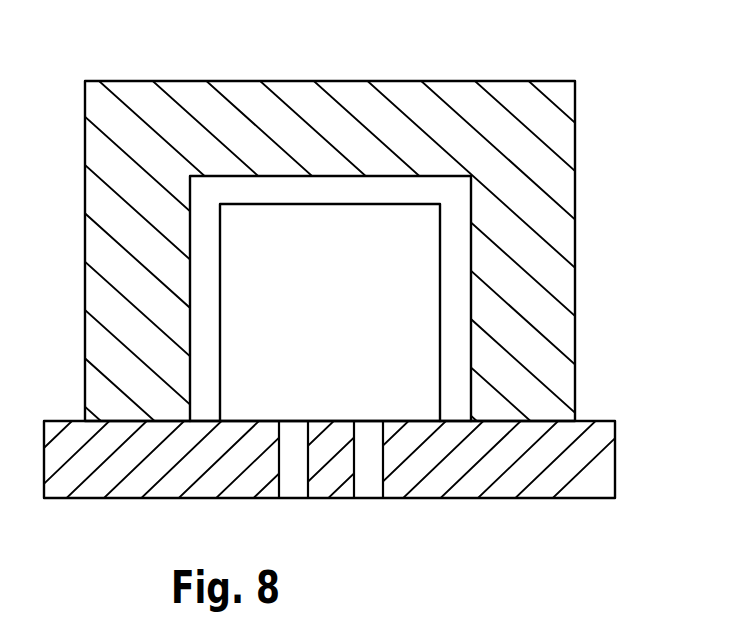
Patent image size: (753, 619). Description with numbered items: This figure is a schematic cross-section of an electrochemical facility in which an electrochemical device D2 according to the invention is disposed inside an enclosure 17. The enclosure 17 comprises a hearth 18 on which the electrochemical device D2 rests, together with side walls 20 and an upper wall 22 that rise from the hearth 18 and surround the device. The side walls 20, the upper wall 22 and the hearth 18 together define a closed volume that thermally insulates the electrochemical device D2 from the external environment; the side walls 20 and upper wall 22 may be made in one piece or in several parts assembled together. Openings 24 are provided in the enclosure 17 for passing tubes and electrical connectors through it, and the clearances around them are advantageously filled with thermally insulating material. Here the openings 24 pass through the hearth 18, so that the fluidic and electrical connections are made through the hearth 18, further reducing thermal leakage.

The enclosure 17 is at (376, 319).
The upper wall 22 is at (328, 123).
The side walls 20 is at (143, 295).
The electrochemical device D2 is at (393, 267).
The hearth 18 is at (398, 482).
The openings 24 is at (292, 477).